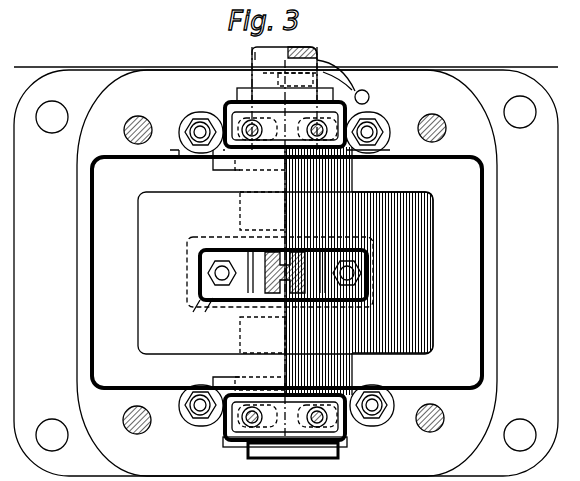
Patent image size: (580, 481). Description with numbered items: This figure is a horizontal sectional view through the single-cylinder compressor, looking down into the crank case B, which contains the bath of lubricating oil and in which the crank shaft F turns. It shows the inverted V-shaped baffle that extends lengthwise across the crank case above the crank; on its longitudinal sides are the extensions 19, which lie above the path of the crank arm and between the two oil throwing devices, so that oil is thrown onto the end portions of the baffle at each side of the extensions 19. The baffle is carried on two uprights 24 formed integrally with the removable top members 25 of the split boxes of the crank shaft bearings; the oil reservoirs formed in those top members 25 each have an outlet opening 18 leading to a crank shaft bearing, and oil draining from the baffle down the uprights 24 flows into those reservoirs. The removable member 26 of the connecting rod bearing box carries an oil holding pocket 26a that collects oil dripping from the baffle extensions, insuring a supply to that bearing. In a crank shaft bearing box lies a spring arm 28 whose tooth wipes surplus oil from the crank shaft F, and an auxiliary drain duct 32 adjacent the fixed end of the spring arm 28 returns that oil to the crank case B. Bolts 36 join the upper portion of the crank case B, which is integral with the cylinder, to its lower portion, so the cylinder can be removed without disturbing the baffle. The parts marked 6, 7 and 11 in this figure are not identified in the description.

The base body 6 is at (353, 210).
The contact bar 7 is at (285, 287).
The terminal nut 11 is at (357, 110).
The outlet opening 18 is at (283, 143).
The extensions 19 is at (147, 273).
The uprights 24 is at (232, 108).
The removable top members 25 is at (187, 113).
The removable member 26 is at (197, 233).
The oil holding pocket 26a is at (186, 318).
The spring arm 28 is at (303, 75).
The duct 32 is at (366, 90).
The bolts 36 is at (124, 133).
The crank case B is at (287, 273).
The crank shaft F is at (255, 55).